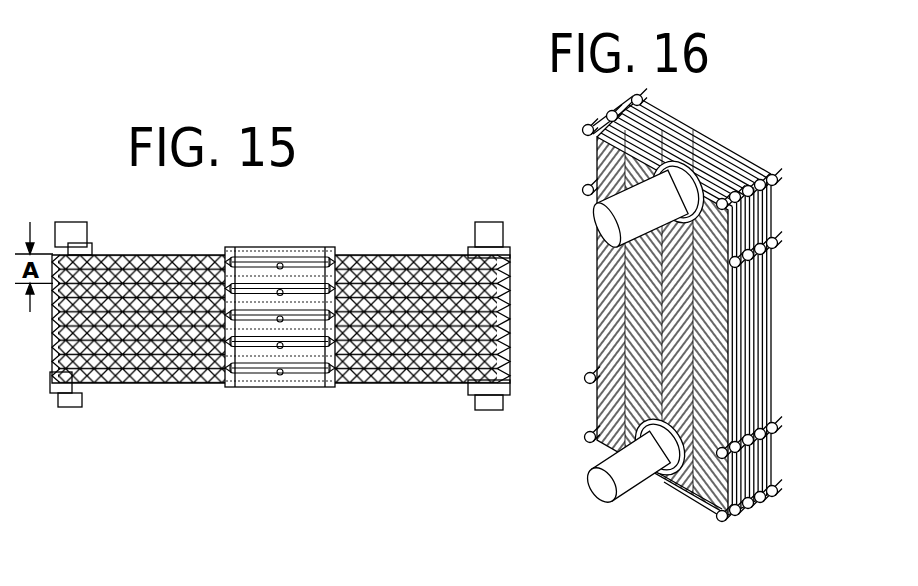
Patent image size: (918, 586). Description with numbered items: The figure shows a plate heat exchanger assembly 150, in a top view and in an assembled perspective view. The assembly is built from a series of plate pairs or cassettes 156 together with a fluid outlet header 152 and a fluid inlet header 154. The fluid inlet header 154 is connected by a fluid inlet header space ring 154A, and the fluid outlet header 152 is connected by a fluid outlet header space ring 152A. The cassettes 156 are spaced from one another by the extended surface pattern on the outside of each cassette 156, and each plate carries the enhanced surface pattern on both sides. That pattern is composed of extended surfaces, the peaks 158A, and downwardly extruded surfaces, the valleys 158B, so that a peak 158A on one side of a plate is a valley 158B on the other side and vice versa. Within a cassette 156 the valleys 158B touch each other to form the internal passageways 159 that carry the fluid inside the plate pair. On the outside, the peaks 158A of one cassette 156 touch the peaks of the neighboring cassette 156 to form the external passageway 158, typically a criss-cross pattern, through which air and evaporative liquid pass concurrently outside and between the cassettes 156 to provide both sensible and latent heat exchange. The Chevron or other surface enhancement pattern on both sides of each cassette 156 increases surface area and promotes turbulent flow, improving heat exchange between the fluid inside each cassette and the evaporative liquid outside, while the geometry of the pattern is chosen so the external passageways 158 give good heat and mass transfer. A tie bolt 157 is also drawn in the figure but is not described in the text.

In FIG. 15, the plate heat exchanger assembly 150 is at (143, 222).
In FIG. 16, the plate heat exchanger assembly 150 is at (800, 285).
In FIG. 16, the fluid outlet header 152 is at (594, 224).
In FIG. 16, the fluid outlet header space ring 152A is at (637, 173).
In FIG. 16, the fluid inlet header 154 is at (604, 487).
In FIG. 16, the fluid inlet header space ring 154A is at (667, 483).
In FIG. 15, the plate pair or cassette 156 is at (197, 255).
In FIG. 16, the plate pair or cassette 156 is at (772, 218).
In FIG. 16, the tie bolt 157 is at (760, 446).
In FIG. 15, the external passageway 158 is at (488, 280).
In FIG. 16, the external passageway 158 is at (700, 140).
In FIG. 15, the peaks 158A is at (133, 253).
In FIG. 15, the valleys 158B is at (73, 276).
In FIG. 15, the internal passageways 159 is at (393, 263).
In FIG. 16, the internal passageways 159 is at (733, 153).